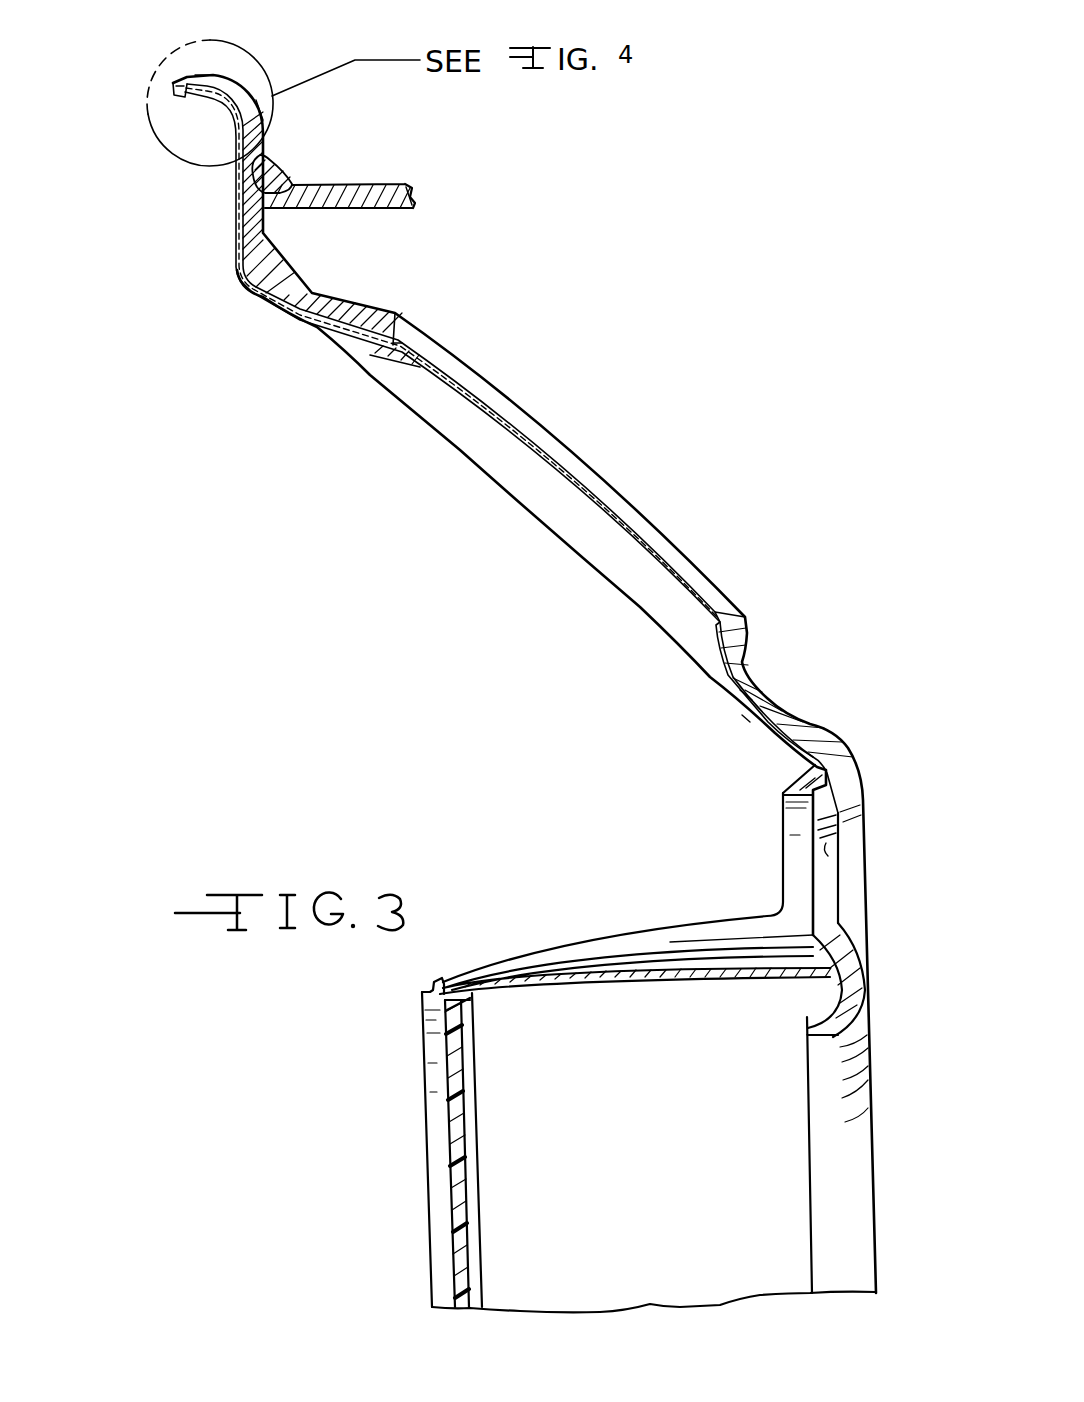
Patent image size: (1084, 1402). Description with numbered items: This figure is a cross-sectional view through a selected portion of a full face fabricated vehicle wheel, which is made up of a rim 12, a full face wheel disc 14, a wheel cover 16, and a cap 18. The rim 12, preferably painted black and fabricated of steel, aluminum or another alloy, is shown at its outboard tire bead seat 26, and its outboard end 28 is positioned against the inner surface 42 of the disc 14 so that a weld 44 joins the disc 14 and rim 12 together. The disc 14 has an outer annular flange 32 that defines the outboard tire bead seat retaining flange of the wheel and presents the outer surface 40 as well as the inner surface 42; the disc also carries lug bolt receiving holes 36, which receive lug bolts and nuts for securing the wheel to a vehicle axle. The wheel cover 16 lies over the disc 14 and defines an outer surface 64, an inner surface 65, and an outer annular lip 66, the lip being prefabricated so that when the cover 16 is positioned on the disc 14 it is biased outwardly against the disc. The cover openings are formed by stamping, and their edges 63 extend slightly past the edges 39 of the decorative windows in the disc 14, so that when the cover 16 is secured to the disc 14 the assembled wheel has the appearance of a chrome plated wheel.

The rim 12 is at (409, 177).
The full face wheel disc 14 is at (312, 294).
The wheel cover 16 is at (247, 288).
The cap 18 is at (422, 998).
The outboard tire bead seat 26 is at (335, 185).
The outboard end of the rim 28 is at (240, 200).
The outer annular flange 32 is at (210, 73).
The lug bolt receiving holes 36 is at (840, 850).
The edges of the windows 39 is at (729, 612).
The outer surface 40 is at (238, 236).
The inner surface 42 is at (263, 113).
The weld 44 is at (278, 168).
The edges of the openings 63 is at (403, 345).
The outer surface 64 is at (742, 718).
The inner surface 65 is at (740, 712).
The outer annular lip 66 is at (188, 99).